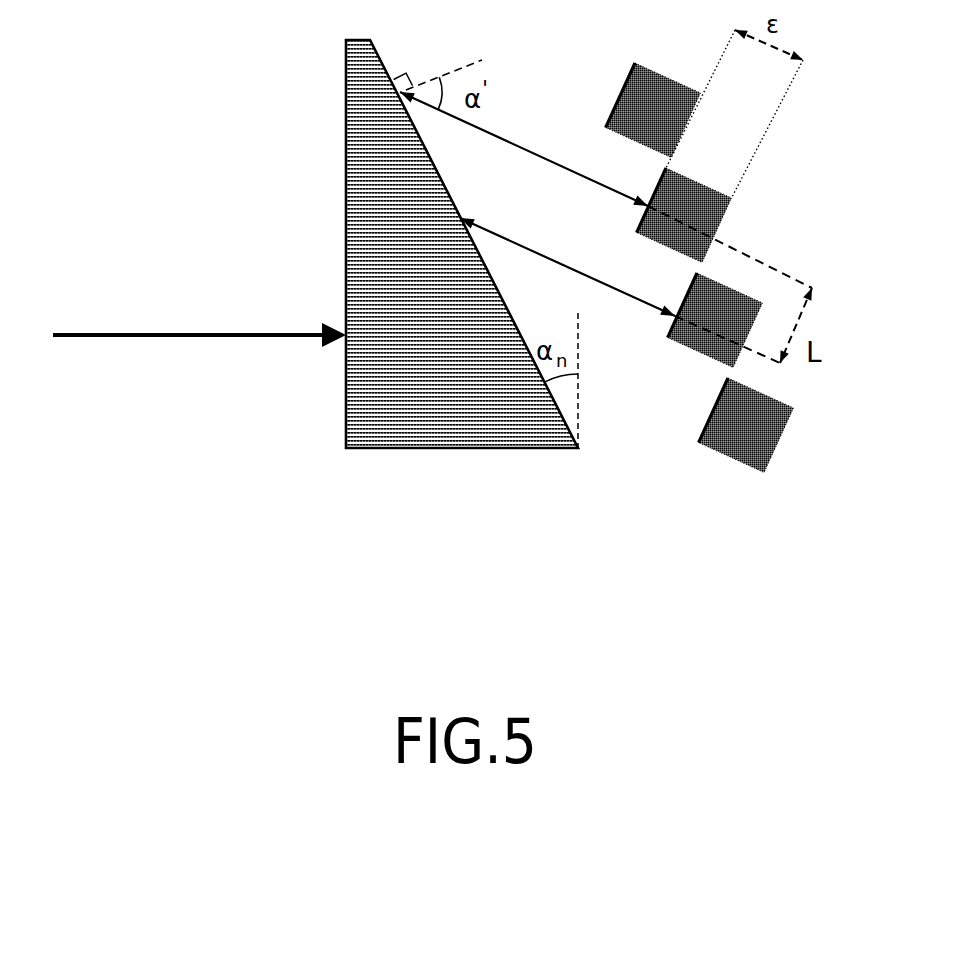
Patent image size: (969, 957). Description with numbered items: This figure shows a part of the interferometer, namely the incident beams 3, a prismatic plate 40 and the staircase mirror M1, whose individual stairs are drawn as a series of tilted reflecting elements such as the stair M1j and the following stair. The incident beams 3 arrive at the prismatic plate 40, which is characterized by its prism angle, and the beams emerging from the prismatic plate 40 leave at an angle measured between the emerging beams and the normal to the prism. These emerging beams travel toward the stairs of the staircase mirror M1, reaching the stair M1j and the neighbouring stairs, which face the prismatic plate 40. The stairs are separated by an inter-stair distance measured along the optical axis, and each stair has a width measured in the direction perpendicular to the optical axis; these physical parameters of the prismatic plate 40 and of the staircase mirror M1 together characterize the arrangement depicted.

The incident beams 3 is at (203, 328).
The prismatic plate 40 is at (368, 477).
The stair of the staircase mirror M1 M1j is at (705, 213).